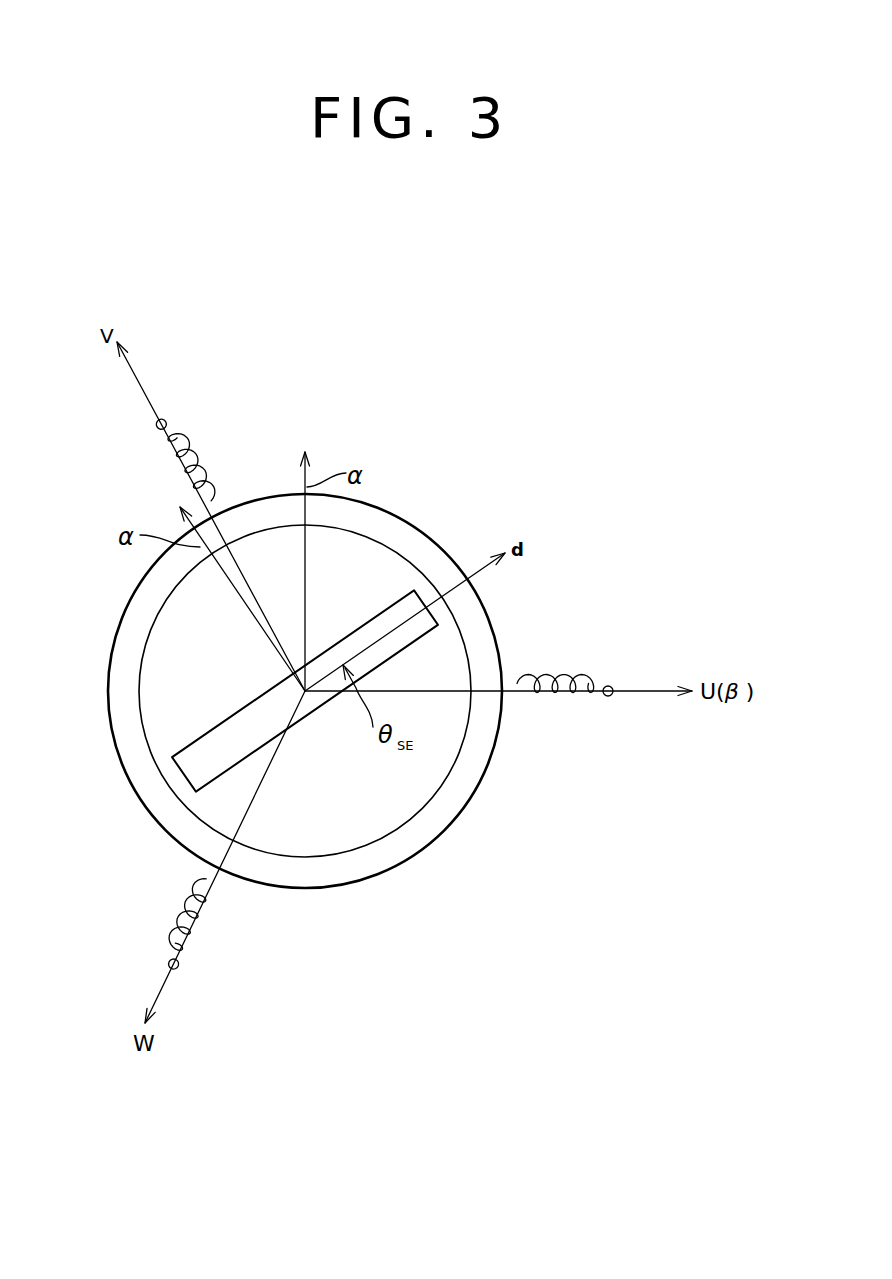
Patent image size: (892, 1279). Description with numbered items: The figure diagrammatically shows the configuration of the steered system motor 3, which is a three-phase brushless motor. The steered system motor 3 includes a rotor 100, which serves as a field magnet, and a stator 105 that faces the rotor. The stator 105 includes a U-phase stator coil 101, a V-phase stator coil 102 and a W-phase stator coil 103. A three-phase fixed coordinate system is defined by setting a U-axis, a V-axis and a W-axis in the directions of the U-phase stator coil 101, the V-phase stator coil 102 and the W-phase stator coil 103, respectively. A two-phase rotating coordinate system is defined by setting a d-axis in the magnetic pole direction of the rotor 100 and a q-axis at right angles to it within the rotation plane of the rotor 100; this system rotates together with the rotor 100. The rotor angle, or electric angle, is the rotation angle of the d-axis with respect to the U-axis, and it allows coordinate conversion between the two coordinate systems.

The steered system motor 3 is at (430, 413).
The rotor 100 is at (228, 734).
The U-phase stator coil 101 is at (545, 670).
The V-phase stator coil 102 is at (203, 448).
The W-phase stator coil 103 is at (183, 903).
The stator 105 is at (465, 782).